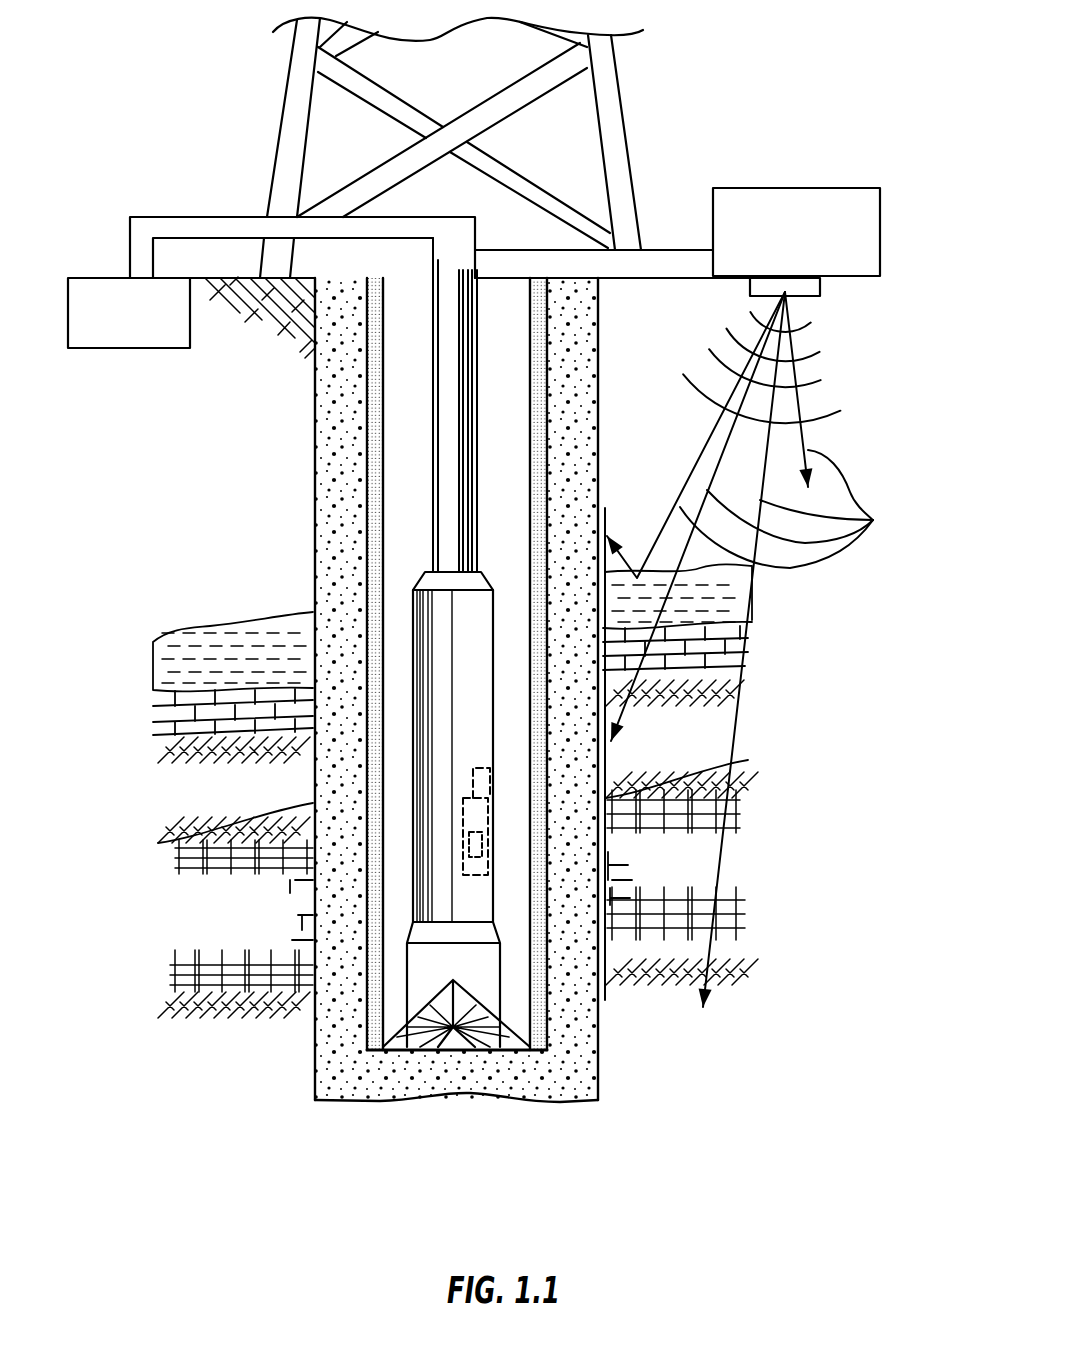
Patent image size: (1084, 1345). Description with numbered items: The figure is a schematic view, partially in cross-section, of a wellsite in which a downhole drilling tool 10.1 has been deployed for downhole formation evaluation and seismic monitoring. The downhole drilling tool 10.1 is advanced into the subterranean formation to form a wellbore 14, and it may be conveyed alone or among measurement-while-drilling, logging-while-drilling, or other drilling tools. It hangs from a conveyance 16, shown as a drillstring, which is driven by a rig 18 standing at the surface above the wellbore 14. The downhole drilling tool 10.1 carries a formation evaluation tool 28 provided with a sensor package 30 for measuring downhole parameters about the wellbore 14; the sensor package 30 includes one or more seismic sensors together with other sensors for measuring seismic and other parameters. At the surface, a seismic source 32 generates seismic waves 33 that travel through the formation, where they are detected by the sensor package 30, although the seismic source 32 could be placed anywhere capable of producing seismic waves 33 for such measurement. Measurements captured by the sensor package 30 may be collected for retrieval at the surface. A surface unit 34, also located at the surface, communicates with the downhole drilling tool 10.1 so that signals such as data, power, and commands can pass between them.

The downhole drilling tool 10.1 is at (412, 608).
The wellbore 14 is at (508, 330).
The conveyance 16 is at (433, 408).
The rig 18 is at (619, 93).
The formation evaluation tool 28 is at (467, 878).
The sensor package 30 is at (477, 860).
The seismic source 32 is at (808, 294).
The seismic waves 33 is at (799, 509).
The surface unit 34 is at (814, 254).